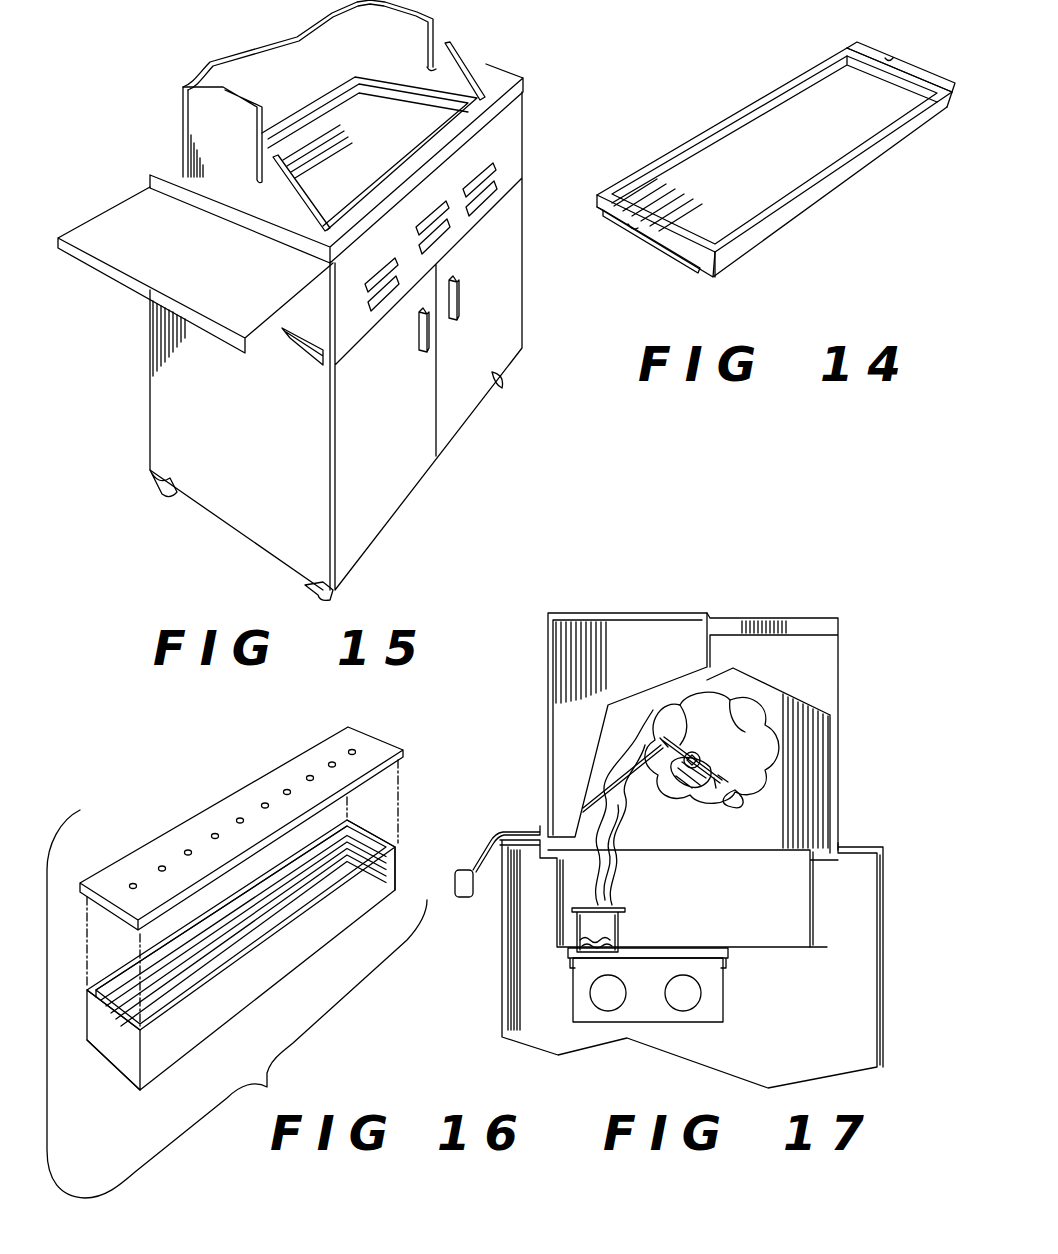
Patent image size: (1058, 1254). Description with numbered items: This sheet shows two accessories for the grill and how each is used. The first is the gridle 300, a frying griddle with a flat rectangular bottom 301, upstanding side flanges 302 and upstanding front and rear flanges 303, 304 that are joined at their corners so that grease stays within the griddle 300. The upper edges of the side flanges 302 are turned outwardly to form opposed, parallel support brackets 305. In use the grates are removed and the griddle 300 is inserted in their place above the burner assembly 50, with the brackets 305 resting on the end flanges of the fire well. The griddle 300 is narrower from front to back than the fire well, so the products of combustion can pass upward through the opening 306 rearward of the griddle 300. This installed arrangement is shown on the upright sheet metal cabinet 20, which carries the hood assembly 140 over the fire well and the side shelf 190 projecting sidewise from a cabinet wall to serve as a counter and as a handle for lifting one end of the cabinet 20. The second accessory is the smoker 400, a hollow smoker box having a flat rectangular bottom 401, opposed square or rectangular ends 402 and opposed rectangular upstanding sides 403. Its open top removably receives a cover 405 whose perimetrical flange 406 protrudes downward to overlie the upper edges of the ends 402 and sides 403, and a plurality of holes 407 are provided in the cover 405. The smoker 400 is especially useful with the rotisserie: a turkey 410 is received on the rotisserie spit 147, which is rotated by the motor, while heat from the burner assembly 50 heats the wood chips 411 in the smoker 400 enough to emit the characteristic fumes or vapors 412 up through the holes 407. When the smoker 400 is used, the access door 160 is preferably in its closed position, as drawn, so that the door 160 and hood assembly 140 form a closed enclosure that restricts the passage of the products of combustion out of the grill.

In FIG. 15, the cabinet 20 is at (228, 497).
In FIG. 15, the hood assembly 140 is at (178, 115).
In FIG. 17, the hood assembly 140 is at (795, 618).
In FIG. 15, the side shelf 190 is at (112, 218).
In FIG. 15, the gridle 300 is at (369, 138).
In FIG. 14, the gridle 300 is at (780, 159).
In FIG. 14, the bottom 301 is at (727, 143).
In FIG. 14, the side flanges 302 is at (903, 82).
In FIG. 14, the front flange 303 is at (740, 248).
In FIG. 14, the rear flange 304 is at (785, 95).
In FIG. 14, the support brackets 305 is at (868, 46).
In FIG. 15, the opening 306 is at (330, 160).
In FIG. 16, the smoker 400 is at (256, 906).
In FIG. 17, the smoker 400 is at (634, 911).
In FIG. 16, the bottom 401 is at (256, 952).
In FIG. 16, the ends 402 is at (363, 843).
In FIG. 16, the sides 403 is at (123, 983).
In FIG. 16, the cover 405 is at (254, 820).
In FIG. 16, the perimetrical flange 406 is at (253, 850).
In FIG. 16, the holes 407 is at (331, 765).
In FIG. 17, the access door 160 is at (652, 612).
In FIG. 17, the rotisserie spit 147 is at (698, 752).
In FIG. 17, the turkey 410 is at (696, 752).
In FIG. 17, the wood chips 411 is at (597, 932).
In FIG. 17, the fumes or vapors 412 is at (637, 807).
In FIG. 17, the burner assembly 50 is at (727, 990).